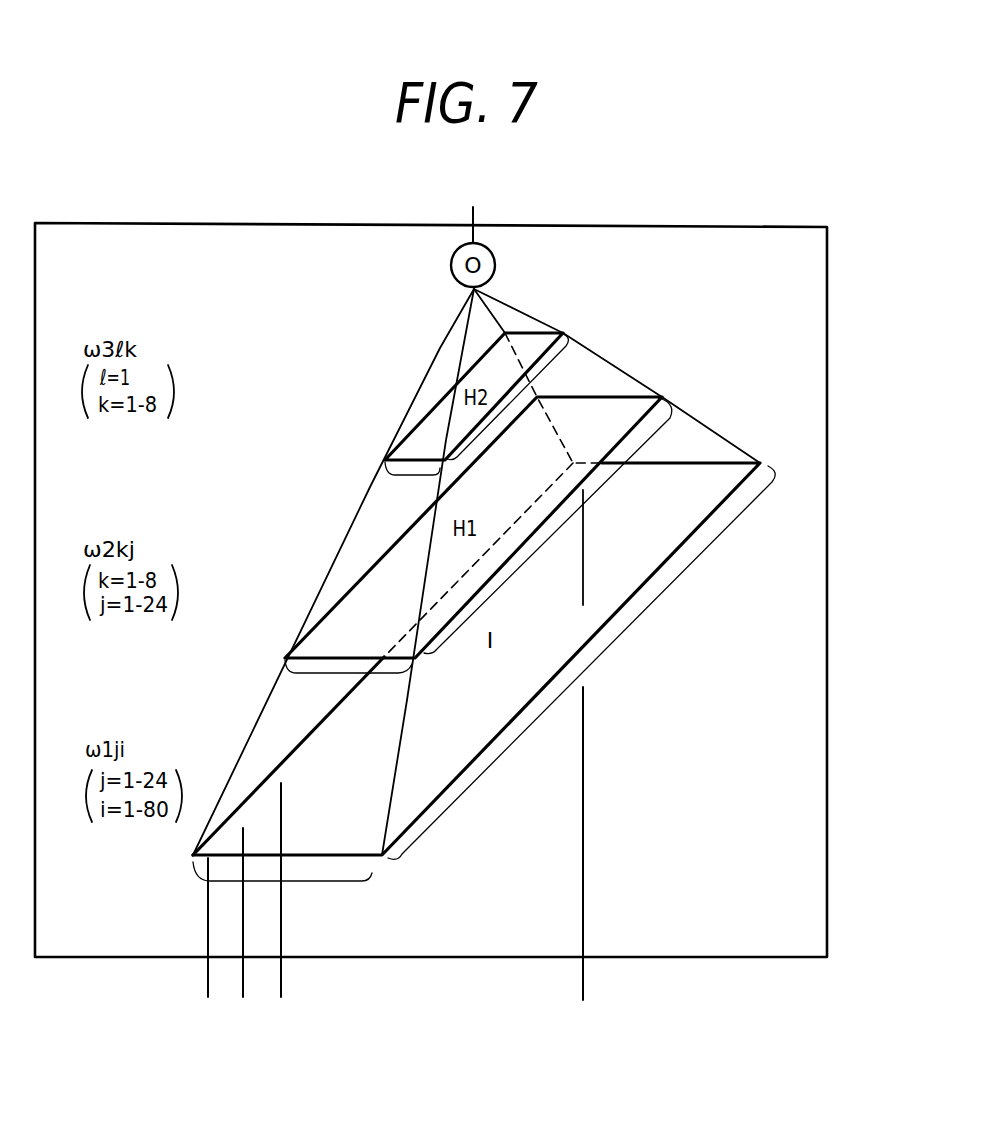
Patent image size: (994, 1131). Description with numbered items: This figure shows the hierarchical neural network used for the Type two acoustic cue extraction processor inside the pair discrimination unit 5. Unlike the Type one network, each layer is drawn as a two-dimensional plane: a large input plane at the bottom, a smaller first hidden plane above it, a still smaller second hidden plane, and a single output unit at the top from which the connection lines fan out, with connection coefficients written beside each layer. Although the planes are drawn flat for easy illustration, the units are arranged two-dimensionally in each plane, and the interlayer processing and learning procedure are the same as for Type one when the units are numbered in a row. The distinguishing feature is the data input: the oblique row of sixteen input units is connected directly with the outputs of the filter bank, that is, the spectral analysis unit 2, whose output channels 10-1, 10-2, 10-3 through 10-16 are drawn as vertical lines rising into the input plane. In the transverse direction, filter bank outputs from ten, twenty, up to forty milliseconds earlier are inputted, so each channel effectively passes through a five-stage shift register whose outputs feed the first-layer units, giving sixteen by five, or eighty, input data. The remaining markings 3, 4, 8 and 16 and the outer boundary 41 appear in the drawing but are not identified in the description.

The display frame 41 is at (772, 226).
The spectral analysis unit 2 is at (412, 484).
The second layer width indicator 3 is at (348, 680).
The third layer slab 4 is at (477, 396).
The pair discrimination unit 5 is at (282, 887).
The second layer slab 8 is at (478, 527).
The first layer slab 16 is at (484, 661).
The output channel 10-1 is at (208, 975).
The output channel 10-2 is at (243, 975).
The output channel 10-3 is at (281, 975).
The output channel 10-16 is at (583, 978).